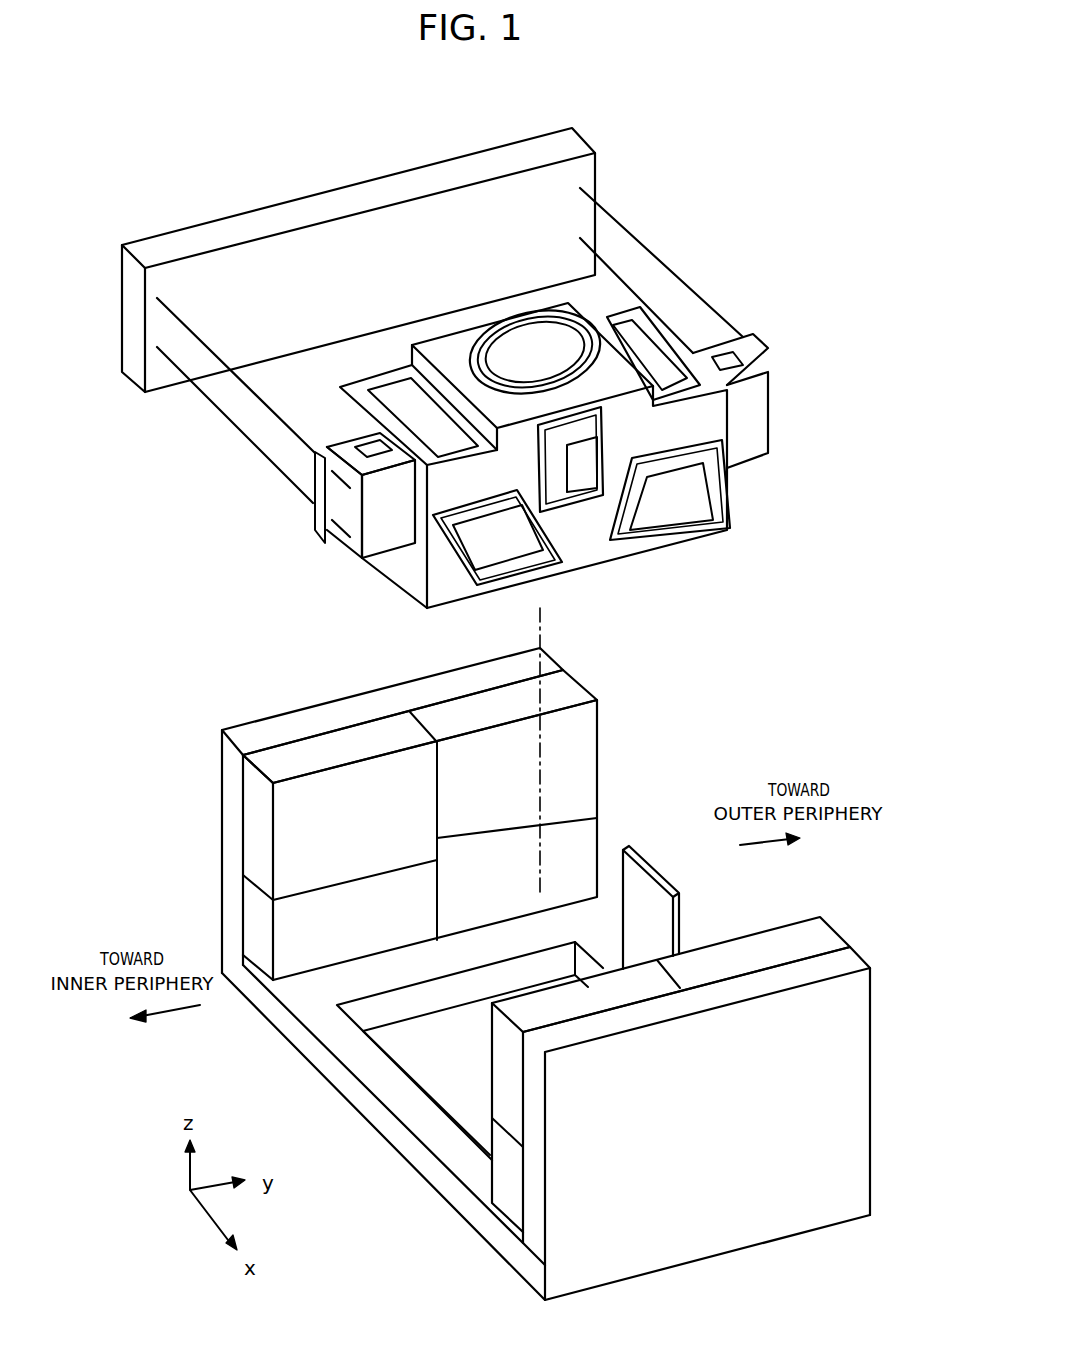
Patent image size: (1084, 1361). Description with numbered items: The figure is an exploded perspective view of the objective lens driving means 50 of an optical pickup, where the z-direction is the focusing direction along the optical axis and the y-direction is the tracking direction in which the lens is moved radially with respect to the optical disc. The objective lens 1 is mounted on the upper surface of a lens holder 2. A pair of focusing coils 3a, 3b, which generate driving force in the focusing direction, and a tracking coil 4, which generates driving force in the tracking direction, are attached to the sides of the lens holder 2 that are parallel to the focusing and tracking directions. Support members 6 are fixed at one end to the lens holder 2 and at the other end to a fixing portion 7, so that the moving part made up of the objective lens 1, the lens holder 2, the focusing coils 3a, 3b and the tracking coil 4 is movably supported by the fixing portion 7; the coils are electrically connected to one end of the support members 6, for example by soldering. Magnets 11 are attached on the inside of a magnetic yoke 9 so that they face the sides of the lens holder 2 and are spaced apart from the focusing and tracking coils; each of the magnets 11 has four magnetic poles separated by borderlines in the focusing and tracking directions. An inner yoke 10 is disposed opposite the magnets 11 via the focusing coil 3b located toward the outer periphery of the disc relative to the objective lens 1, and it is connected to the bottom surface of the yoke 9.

The objective lens 1 is at (520, 342).
The lens holder 2 is at (668, 428).
The focusing coil 3a is at (518, 573).
The focusing coil 3b is at (680, 535).
The tracking coil 4 is at (585, 505).
The support member 6 is at (255, 400).
The fixing portion 7 is at (210, 235).
The magnetic yoke 9 is at (827, 1052).
The inner yoke 10 is at (638, 857).
The magnet 11 is at (297, 755).
The objective lens driving means 50 is at (697, 170).